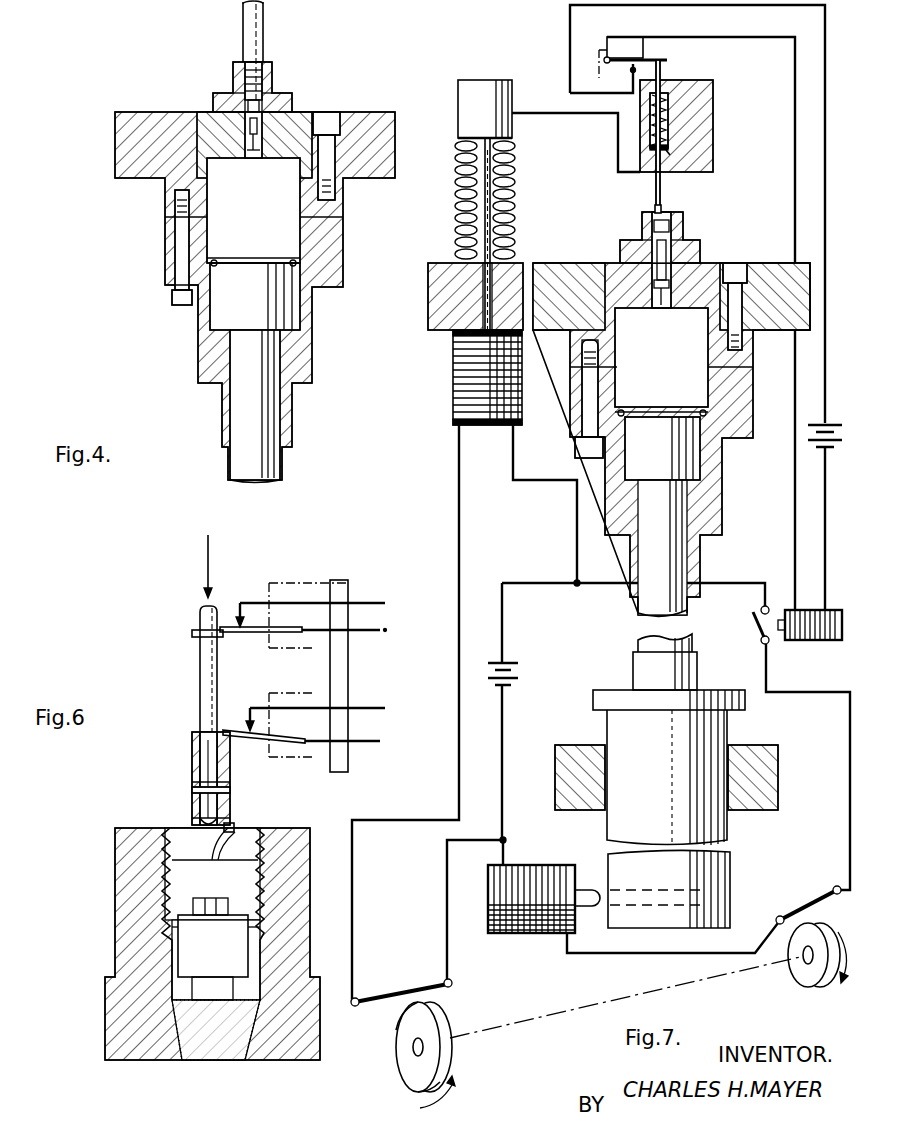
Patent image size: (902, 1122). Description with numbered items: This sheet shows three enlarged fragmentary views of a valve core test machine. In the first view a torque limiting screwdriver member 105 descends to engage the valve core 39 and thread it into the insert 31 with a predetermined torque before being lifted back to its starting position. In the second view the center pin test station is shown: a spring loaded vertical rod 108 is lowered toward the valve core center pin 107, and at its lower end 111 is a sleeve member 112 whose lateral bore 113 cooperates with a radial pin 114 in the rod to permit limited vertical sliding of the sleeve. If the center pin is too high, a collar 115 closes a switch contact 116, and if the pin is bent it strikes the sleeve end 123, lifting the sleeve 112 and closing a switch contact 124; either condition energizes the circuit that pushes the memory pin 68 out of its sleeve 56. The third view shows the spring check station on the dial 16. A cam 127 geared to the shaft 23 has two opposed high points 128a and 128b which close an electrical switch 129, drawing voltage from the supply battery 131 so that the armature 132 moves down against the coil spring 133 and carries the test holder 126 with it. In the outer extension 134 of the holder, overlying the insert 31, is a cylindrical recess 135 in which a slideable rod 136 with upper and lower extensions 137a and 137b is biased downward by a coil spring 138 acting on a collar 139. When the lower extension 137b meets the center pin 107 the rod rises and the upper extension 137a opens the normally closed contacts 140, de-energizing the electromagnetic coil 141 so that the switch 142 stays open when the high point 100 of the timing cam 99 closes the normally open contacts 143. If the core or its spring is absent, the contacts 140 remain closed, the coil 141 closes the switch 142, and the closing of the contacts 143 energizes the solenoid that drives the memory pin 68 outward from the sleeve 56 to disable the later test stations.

In FIG. 4, the torque limiting screwdriver member 105 is at (265, 37).
In FIG. 4, the insert 31 is at (213, 100).
In FIG. 7, the insert 31 is at (700, 252).
In FIG. 4, the valve core 39 is at (262, 100).
In FIG. 6, the valve core 39 is at (190, 937).
In FIG. 7, the valve core 39 is at (650, 241).
In FIG. 6, the collar 115 is at (190, 631).
In FIG. 6, the switch contact 116 is at (240, 600).
In FIG. 7, the switch contact 116 is at (533, 933).
In FIG. 6, the vertical rod 108 is at (200, 661).
In FIG. 6, the sleeve member 112 is at (192, 746).
In FIG. 6, the lower end 111 is at (210, 760).
In FIG. 6, the lateral bore 113 is at (192, 782).
In FIG. 6, the radial pin 114 is at (200, 793).
In FIG. 6, the sleeve end 123 is at (192, 822).
In FIG. 6, the switch contact 124 is at (242, 748).
In FIG. 6, the valve core center pin 107 is at (234, 830).
In FIG. 7, the valve core center pin 107 is at (665, 212).
In FIG. 7, the test holder 126 is at (517, 100).
In FIG. 7, the coil spring 133 is at (462, 216).
In FIG. 7, the armature 132 is at (482, 305).
In FIG. 7, the normally closed electrical contacts 140 is at (656, 52).
In FIG. 7, the upper extension 137a is at (662, 73).
In FIG. 7, the lower extension 137b is at (655, 199).
In FIG. 7, the outer extension 134 is at (706, 99).
In FIG. 7, the slideable rod 136 is at (668, 124).
In FIG. 7, the coil spring 138 is at (650, 128).
In FIG. 7, the cylindrical recess 135 is at (668, 148).
In FIG. 7, the collar 139 is at (669, 152).
In FIG. 7, the dial 16 is at (557, 262).
In FIG. 7, the supply battery 131 is at (518, 676).
In FIG. 7, the switch 142 is at (755, 630).
In FIG. 7, the electromagnetic coil 141 is at (820, 642).
In FIG. 7, the sleeve 56 is at (727, 832).
In FIG. 7, the memory pin 68 is at (733, 873).
In FIG. 7, the normally open contacts 143 is at (806, 898).
In FIG. 7, the electrical switch 129 is at (427, 980).
In FIG. 7, the high point 128b is at (410, 1012).
In FIG. 7, the shaft 23 is at (413, 1046).
In FIG. 7, the cam 127 is at (410, 1072).
In FIG. 7, the high point 128a is at (448, 1080).
In FIG. 7, the timing cam 99 is at (802, 968).
In FIG. 7, the high point 100 is at (824, 960).